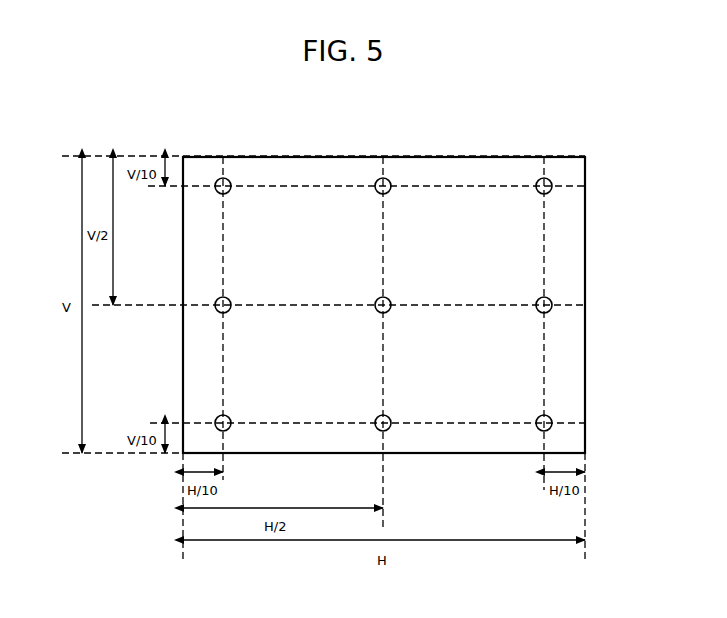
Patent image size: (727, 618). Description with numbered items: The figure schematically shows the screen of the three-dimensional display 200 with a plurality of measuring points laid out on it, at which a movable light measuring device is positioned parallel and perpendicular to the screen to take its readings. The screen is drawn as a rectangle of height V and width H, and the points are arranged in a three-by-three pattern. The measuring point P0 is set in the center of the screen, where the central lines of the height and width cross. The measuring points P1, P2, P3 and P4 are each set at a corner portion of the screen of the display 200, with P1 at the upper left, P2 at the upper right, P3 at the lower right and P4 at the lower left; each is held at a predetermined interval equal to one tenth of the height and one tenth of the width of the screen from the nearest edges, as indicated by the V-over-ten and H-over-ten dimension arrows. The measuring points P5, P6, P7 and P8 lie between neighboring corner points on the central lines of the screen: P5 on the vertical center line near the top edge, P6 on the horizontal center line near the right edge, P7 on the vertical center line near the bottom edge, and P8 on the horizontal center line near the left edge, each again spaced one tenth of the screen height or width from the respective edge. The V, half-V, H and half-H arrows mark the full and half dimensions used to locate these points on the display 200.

The 3D display 200 is at (585, 157).
The measuring point 0 P0 is at (391, 314).
The measuring point 1 P1 is at (231, 195).
The measuring point 2 P2 is at (552, 195).
The measuring point 3 P3 is at (552, 417).
The measuring point 4 P4 is at (231, 417).
The measuring point 5 P5 is at (391, 195).
The measuring point 6 P6 is at (552, 314).
The measuring point 7 P7 is at (391, 417).
The measuring point 8 P8 is at (231, 314).